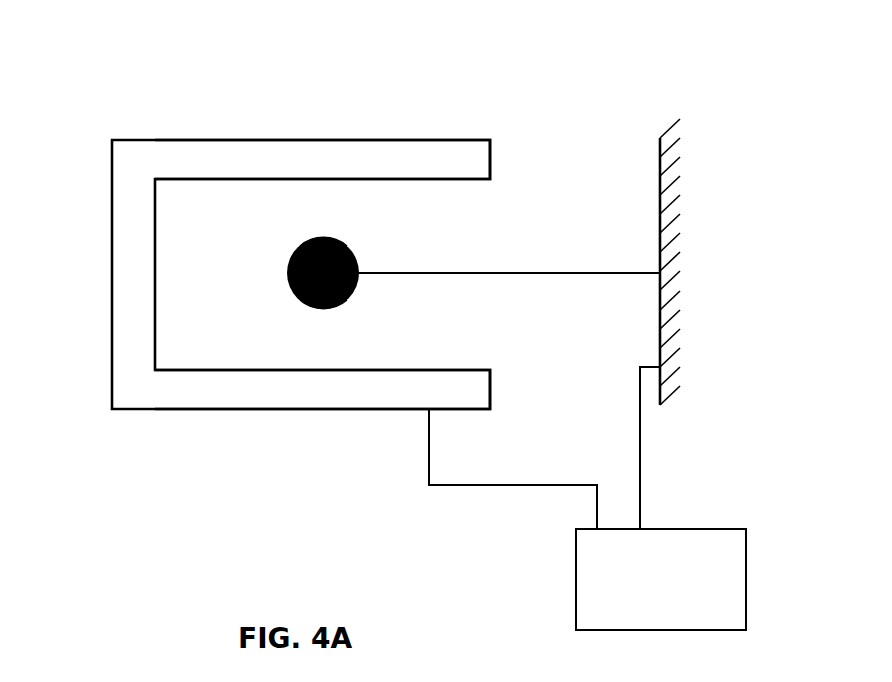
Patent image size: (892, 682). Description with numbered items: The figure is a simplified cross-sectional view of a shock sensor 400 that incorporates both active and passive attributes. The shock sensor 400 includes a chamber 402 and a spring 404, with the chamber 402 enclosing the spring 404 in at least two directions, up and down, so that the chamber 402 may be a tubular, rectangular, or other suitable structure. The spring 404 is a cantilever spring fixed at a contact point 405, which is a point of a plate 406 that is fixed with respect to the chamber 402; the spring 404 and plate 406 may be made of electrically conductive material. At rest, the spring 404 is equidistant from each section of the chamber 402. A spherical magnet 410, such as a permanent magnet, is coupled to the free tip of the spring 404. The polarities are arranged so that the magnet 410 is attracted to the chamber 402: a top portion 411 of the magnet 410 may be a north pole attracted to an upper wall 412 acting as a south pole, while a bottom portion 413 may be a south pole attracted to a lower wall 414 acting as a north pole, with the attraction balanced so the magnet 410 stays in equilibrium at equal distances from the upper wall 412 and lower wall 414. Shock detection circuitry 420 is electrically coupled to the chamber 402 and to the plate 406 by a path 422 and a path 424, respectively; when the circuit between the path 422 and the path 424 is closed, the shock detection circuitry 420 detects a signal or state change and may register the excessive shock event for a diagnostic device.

The shock sensor 400 is at (368, 52).
The chamber 402 is at (145, 140).
The spring 404 is at (548, 272).
The contact point 405 is at (660, 257).
The plate 406 is at (662, 195).
The magnet 410 is at (291, 262).
The top portion 411 is at (337, 240).
The upper wall 412 is at (300, 180).
The bottom portion 413 is at (328, 307).
The lower wall 414 is at (300, 372).
The shock detection circuitry 420 is at (577, 580).
The path 422 is at (492, 485).
The path 424 is at (640, 484).